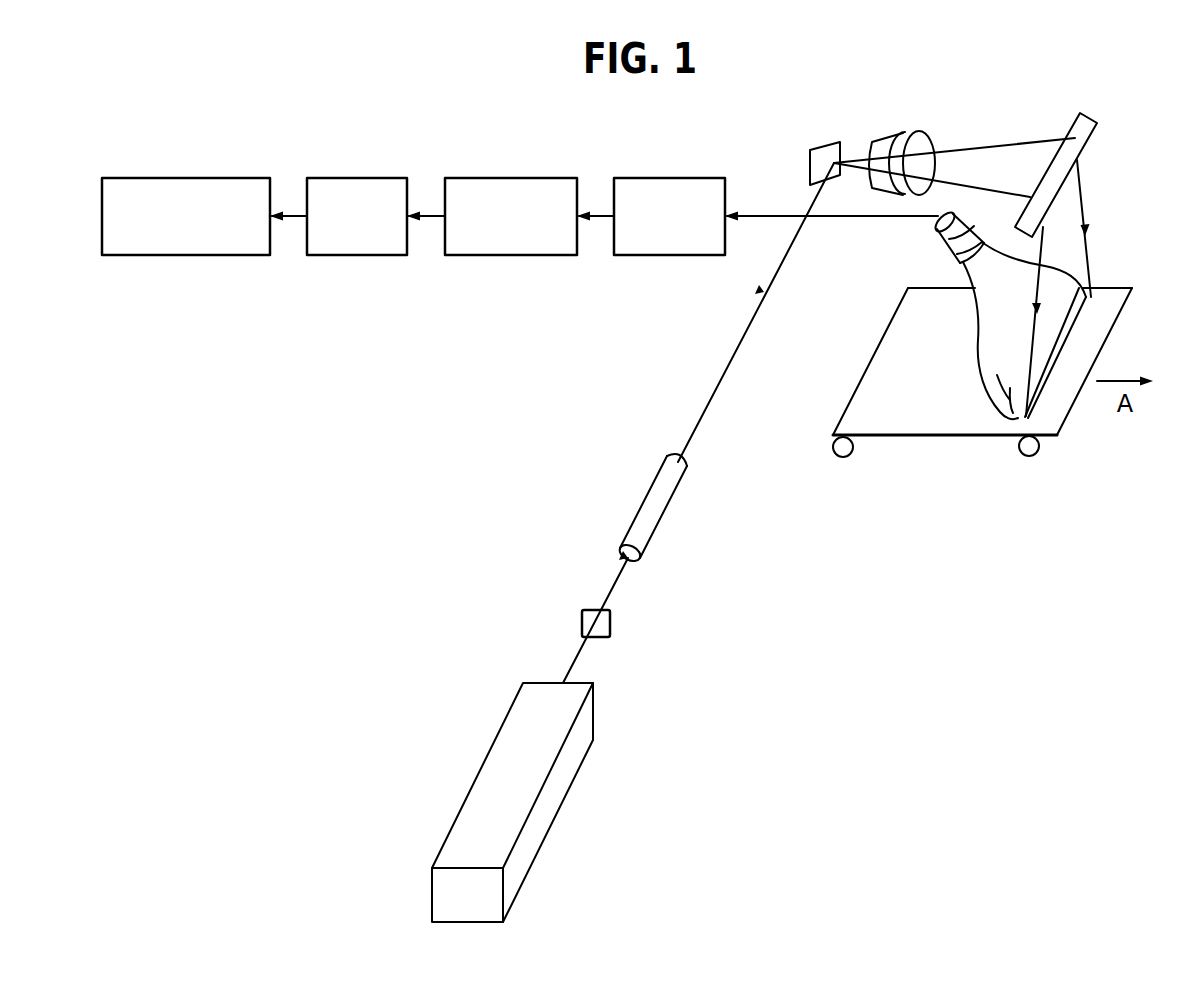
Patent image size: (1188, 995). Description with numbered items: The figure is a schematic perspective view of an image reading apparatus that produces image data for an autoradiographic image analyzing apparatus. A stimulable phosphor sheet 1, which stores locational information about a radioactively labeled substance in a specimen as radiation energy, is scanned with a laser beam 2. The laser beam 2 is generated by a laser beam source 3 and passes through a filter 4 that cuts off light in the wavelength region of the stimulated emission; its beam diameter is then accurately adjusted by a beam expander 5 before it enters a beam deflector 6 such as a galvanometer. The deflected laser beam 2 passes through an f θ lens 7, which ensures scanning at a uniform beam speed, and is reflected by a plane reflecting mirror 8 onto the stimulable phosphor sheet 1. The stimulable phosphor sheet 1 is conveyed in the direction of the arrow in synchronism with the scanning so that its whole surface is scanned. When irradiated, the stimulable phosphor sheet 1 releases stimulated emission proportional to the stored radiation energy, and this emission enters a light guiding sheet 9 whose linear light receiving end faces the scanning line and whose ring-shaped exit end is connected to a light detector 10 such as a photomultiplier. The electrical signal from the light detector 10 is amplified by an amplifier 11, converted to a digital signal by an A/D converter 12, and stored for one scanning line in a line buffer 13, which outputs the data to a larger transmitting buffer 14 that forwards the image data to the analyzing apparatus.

The stimulable phosphor sheet 1 is at (922, 412).
The laser beam 2 is at (742, 337).
The laser beam source 3 is at (530, 713).
The filter 4 is at (585, 617).
The beam expander 5 is at (647, 510).
The beam deflector 6 is at (833, 148).
The f θ lens 7 is at (903, 132).
The plane reflecting mirror 8 is at (1075, 138).
The light guiding sheet 9 is at (992, 432).
The light detector 10 is at (938, 233).
The amplifier 11 is at (683, 177).
The A/D converter 12 is at (513, 177).
The line buffer 13 is at (361, 177).
The transmitting buffer 14 is at (203, 177).